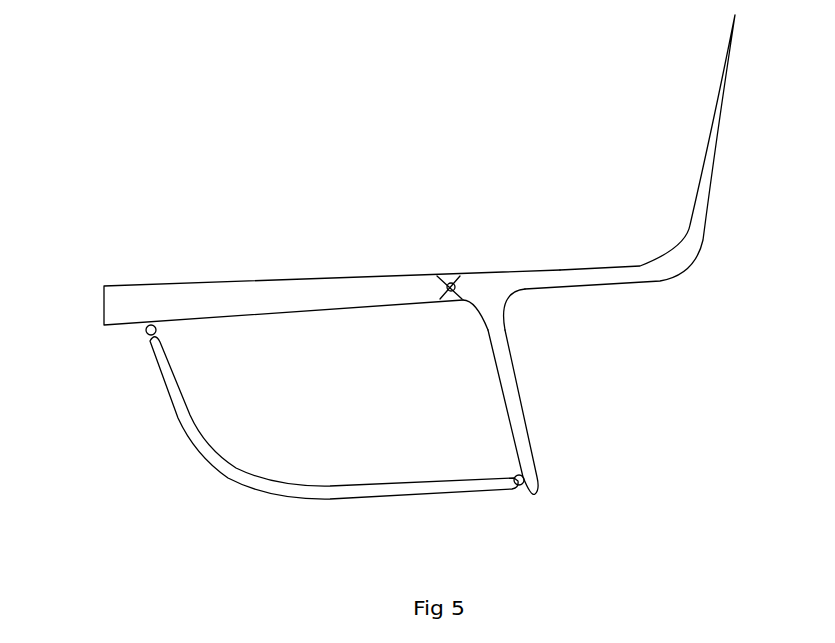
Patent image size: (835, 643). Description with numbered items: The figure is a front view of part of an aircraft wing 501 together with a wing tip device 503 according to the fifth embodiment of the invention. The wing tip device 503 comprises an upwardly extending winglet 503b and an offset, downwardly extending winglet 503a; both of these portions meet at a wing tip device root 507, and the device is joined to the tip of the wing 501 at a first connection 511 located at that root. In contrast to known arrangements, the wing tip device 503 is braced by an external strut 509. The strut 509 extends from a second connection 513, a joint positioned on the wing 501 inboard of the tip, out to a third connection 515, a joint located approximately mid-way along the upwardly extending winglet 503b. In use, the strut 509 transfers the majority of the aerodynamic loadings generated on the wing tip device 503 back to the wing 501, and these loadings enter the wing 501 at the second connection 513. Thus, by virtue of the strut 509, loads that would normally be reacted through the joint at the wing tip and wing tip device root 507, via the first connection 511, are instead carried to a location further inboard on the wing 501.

The wing 501 is at (242, 293).
The wing tip device 503 is at (599, 254).
The downwardly extending winglet 503a is at (517, 390).
The upwardly extending winglet 503b is at (713, 110).
The wing tip device root 507 is at (483, 292).
The strut 509 is at (265, 492).
The first connection 511 is at (447, 282).
The second connection 513 is at (147, 333).
The third connection 515 is at (518, 487).